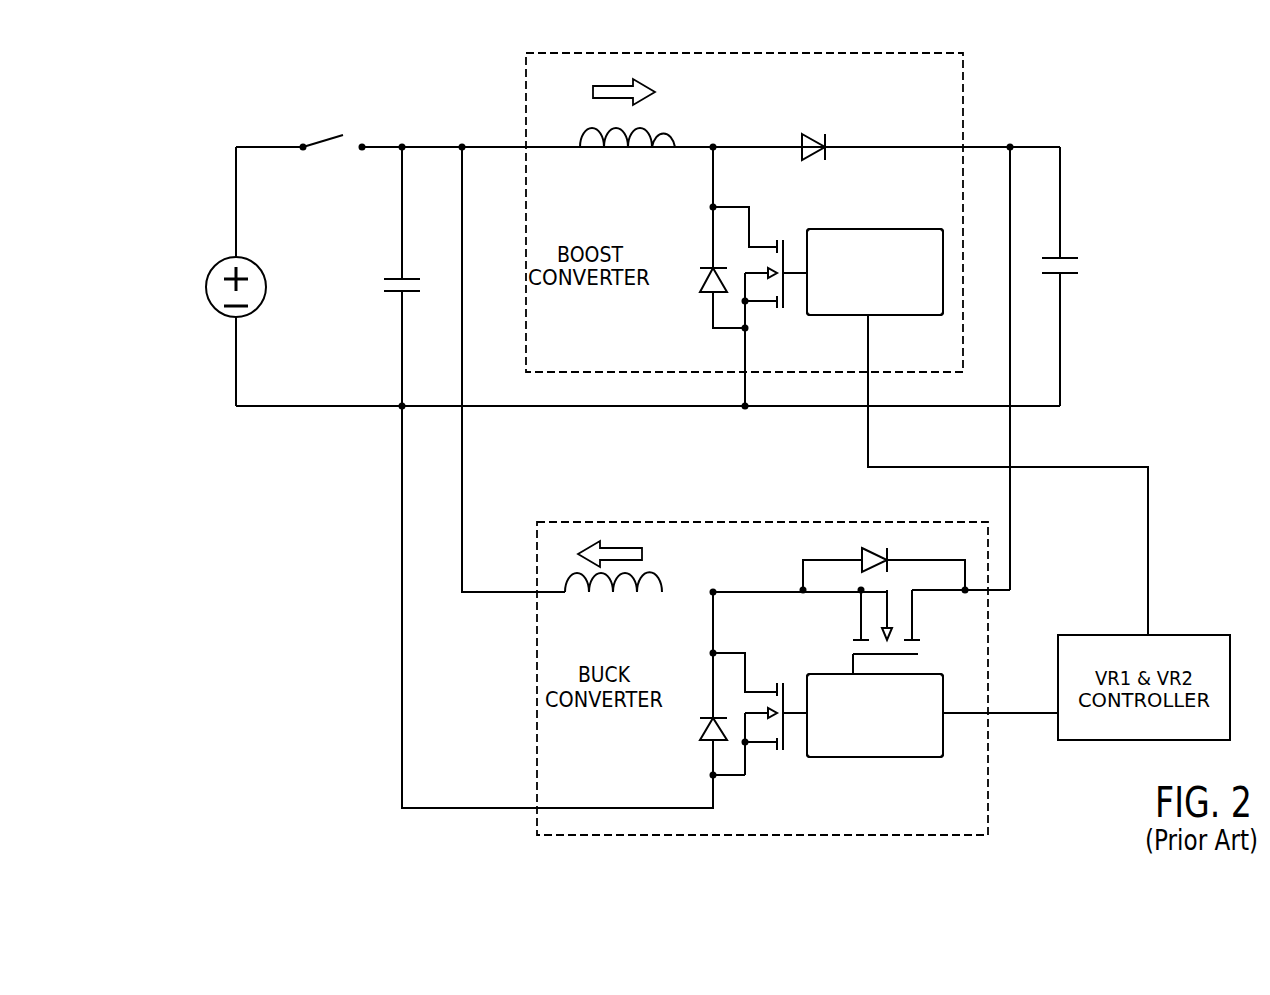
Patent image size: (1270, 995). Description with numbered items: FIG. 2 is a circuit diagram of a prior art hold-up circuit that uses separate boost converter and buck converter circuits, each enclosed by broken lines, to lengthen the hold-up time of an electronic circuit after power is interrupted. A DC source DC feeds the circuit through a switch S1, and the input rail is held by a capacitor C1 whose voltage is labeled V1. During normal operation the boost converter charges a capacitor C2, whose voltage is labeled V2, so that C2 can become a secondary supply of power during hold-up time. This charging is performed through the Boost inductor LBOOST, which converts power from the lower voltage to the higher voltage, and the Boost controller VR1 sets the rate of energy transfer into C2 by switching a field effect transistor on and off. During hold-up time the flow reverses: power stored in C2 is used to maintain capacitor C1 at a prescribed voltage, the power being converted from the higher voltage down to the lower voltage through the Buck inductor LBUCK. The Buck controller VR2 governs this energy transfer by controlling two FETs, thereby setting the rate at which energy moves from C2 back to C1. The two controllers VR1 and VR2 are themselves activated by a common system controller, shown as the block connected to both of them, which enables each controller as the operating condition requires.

The switch S1 is at (334, 131).
The DC voltage source DC is at (218, 287).
The input voltage V1 is at (395, 259).
The capacitor C1 is at (391, 296).
The Buck inductor LBUCK is at (627, 161).
The Boost controller VR1 is at (868, 228).
The output voltage V2 is at (1070, 249).
The capacitor C2 is at (1072, 279).
The Boost inductor LBOOST is at (613, 605).
The Buck controller VR2 is at (890, 758).